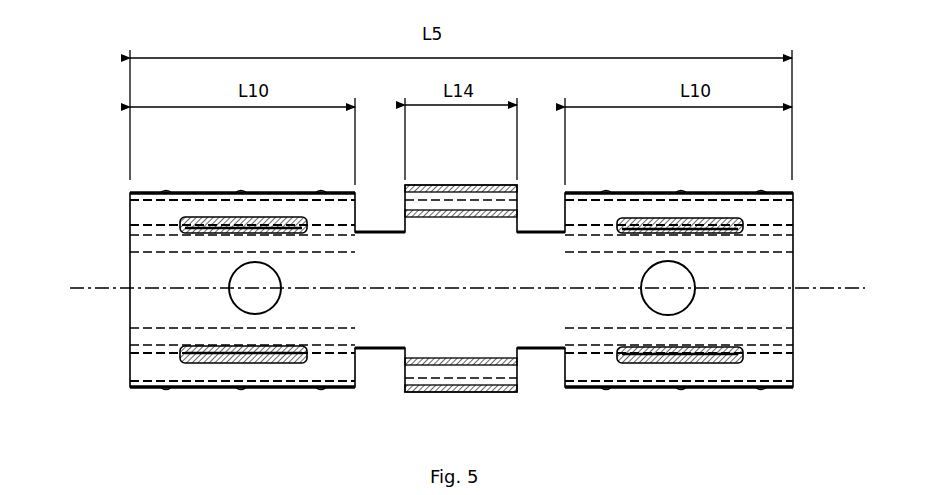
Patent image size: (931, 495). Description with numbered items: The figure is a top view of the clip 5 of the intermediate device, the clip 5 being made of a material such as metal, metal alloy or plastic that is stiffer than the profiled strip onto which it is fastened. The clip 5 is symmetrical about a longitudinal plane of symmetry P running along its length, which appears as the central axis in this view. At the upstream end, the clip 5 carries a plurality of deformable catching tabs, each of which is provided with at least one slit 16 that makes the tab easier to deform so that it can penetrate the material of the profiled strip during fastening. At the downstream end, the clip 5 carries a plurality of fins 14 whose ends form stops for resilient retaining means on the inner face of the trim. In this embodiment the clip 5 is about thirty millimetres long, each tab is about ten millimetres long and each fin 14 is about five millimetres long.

The clip 5 is at (106, 151).
The fin 14 is at (443, 207).
The slit 16 is at (243, 217).
The longitudinal plane of symmetry P is at (101, 291).